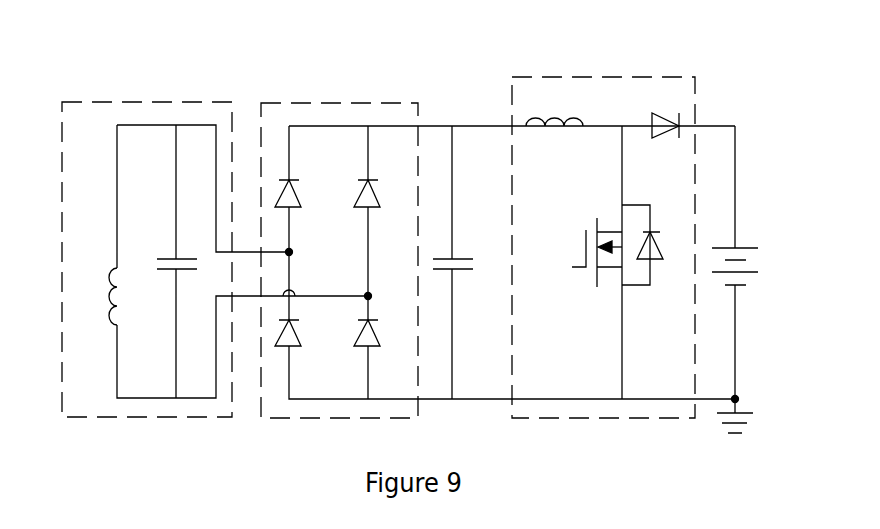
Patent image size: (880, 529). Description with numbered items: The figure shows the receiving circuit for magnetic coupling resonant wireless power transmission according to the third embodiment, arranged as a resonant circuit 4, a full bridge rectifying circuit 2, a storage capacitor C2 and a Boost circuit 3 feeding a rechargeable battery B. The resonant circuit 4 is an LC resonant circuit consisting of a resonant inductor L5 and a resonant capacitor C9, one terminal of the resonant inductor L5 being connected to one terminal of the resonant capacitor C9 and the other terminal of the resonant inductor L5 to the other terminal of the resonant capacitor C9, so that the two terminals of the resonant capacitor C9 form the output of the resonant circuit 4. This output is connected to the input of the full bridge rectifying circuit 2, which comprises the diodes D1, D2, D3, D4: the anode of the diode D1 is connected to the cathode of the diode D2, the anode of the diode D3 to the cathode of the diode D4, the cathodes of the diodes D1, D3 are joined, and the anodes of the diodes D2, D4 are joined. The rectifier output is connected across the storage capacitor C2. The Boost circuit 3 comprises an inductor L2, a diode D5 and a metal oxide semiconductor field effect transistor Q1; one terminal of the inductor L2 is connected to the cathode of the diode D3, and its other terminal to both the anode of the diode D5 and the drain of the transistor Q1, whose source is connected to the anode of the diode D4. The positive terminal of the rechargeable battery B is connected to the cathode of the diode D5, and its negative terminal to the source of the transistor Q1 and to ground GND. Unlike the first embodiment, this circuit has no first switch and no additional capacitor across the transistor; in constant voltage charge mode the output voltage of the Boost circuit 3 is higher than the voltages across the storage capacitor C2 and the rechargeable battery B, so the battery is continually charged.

The full bridge rectifying circuit 2 is at (338, 103).
The Boost circuit 3 is at (647, 77).
The resonant circuit 4 is at (147, 102).
The resonant inductor L5 is at (93, 296).
The resonant capacitor C9 is at (167, 249).
The diode D1 is at (305, 186).
The diode D2 is at (305, 328).
The diode D3 is at (383, 186).
The diode D4 is at (383, 328).
The storage capacitor C2 is at (465, 262).
The inductor L2 is at (554, 108).
The metal oxide semiconductor field effect transistor Q1 is at (614, 238).
The diode D5 is at (665, 109).
The rechargeable battery B is at (736, 262).
The ground GND is at (735, 415).